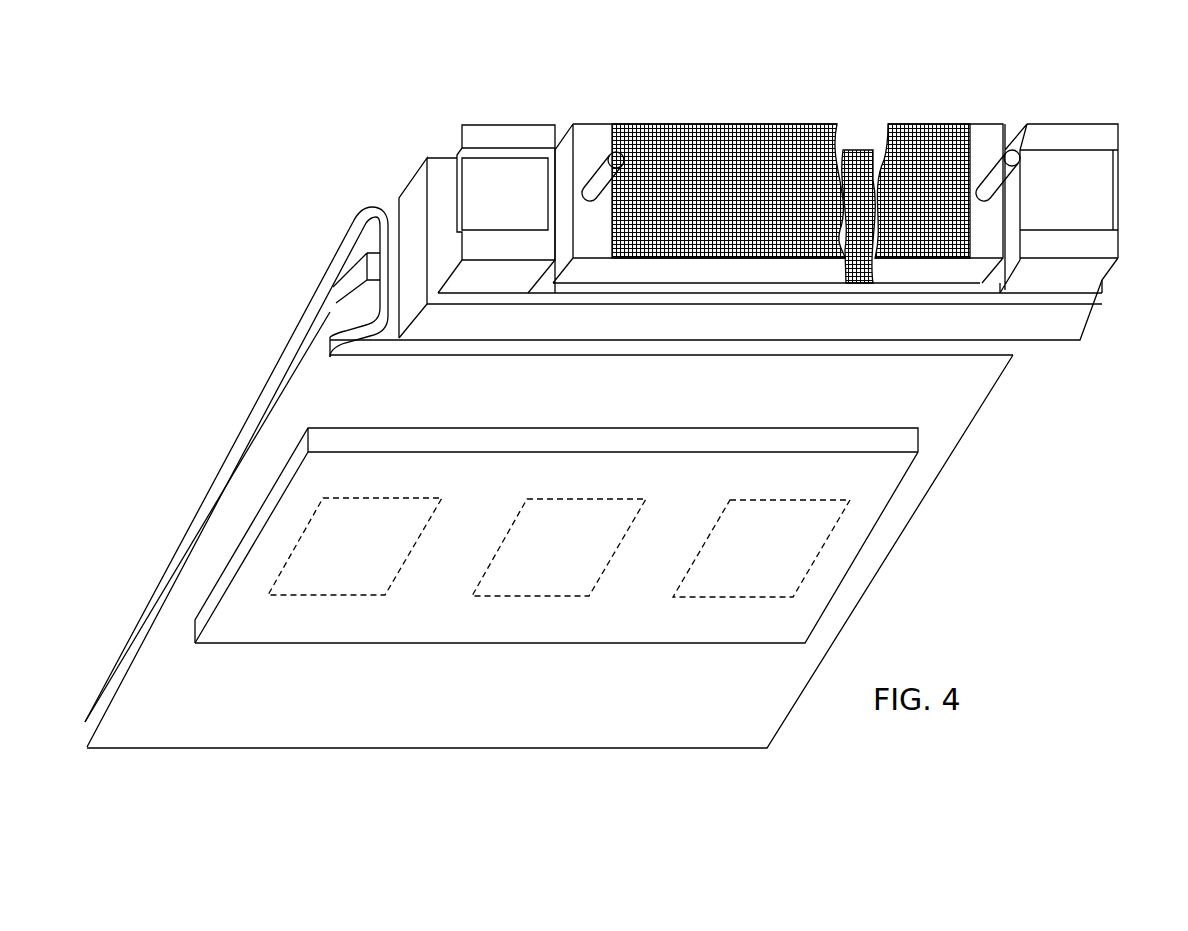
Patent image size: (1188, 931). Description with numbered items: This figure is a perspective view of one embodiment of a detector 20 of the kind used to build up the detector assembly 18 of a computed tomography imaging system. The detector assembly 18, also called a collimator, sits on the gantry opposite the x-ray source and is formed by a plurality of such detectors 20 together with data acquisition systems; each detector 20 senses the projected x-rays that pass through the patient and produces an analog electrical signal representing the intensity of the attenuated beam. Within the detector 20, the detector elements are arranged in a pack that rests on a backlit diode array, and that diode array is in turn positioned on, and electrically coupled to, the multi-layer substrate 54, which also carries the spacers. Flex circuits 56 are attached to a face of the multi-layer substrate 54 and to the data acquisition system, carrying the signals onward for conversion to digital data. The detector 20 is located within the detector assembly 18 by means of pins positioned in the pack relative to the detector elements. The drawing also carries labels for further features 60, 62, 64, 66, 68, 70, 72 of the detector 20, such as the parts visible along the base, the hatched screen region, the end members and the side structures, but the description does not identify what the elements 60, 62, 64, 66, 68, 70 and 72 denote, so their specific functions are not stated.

The detector assembly 18 is at (753, 214).
The detector 20 is at (900, 508).
The multi-layer substrate 54 is at (695, 136).
The flex circuits 56 is at (611, 108).
The locating pin 60 is at (598, 163).
The support plate 62 is at (973, 290).
The break lines 64 is at (862, 148).
The tray 66 is at (1080, 323).
The end blocks 68 is at (500, 130).
The retaining clip 70 is at (343, 243).
The side wall 72 is at (398, 200).